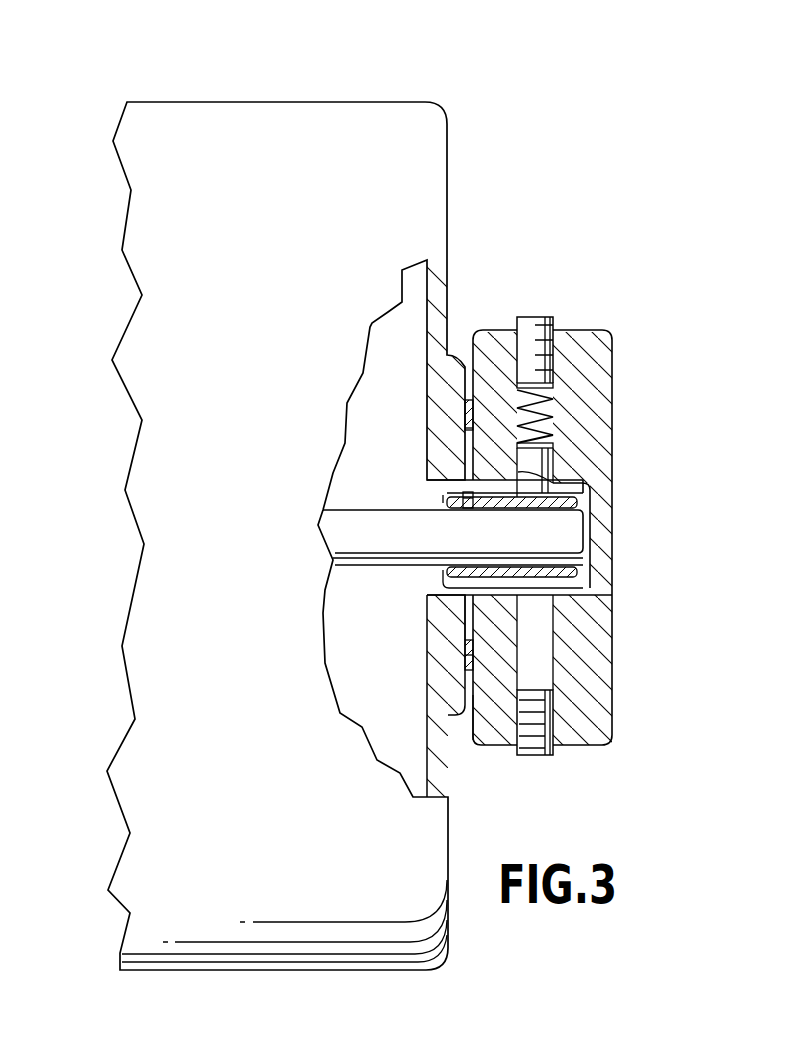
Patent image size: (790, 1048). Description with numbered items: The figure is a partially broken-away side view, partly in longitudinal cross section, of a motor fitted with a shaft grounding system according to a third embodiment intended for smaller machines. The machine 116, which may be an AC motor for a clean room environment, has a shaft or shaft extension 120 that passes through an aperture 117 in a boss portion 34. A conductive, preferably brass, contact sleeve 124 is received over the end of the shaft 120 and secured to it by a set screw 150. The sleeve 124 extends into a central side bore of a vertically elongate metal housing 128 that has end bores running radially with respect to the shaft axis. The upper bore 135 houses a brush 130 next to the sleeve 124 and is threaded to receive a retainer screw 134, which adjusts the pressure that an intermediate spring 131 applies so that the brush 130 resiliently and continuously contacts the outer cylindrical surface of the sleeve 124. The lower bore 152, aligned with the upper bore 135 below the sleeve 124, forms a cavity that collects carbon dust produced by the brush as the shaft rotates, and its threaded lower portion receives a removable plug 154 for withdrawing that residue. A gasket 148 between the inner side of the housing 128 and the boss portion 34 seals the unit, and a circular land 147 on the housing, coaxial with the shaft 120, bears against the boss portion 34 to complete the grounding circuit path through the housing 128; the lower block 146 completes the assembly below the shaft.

The machine 116 is at (353, 102).
The aperture 117 is at (441, 587).
The circular land 147 is at (463, 618).
The gasket 148 is at (462, 660).
The housing 128 is at (622, 360).
The retainer screw 134 is at (537, 315).
The spring 131 is at (555, 405).
The brush 130 is at (548, 470).
The upper bore 135 is at (553, 483).
The set screw 150 is at (463, 494).
The shaft 120 is at (567, 540).
The contact sleeve 124 is at (612, 587).
The lower clamp block 146 is at (615, 687).
The lower bore 152 is at (520, 647).
The plug 154 is at (535, 757).
The boss portion 34 is at (478, 700).